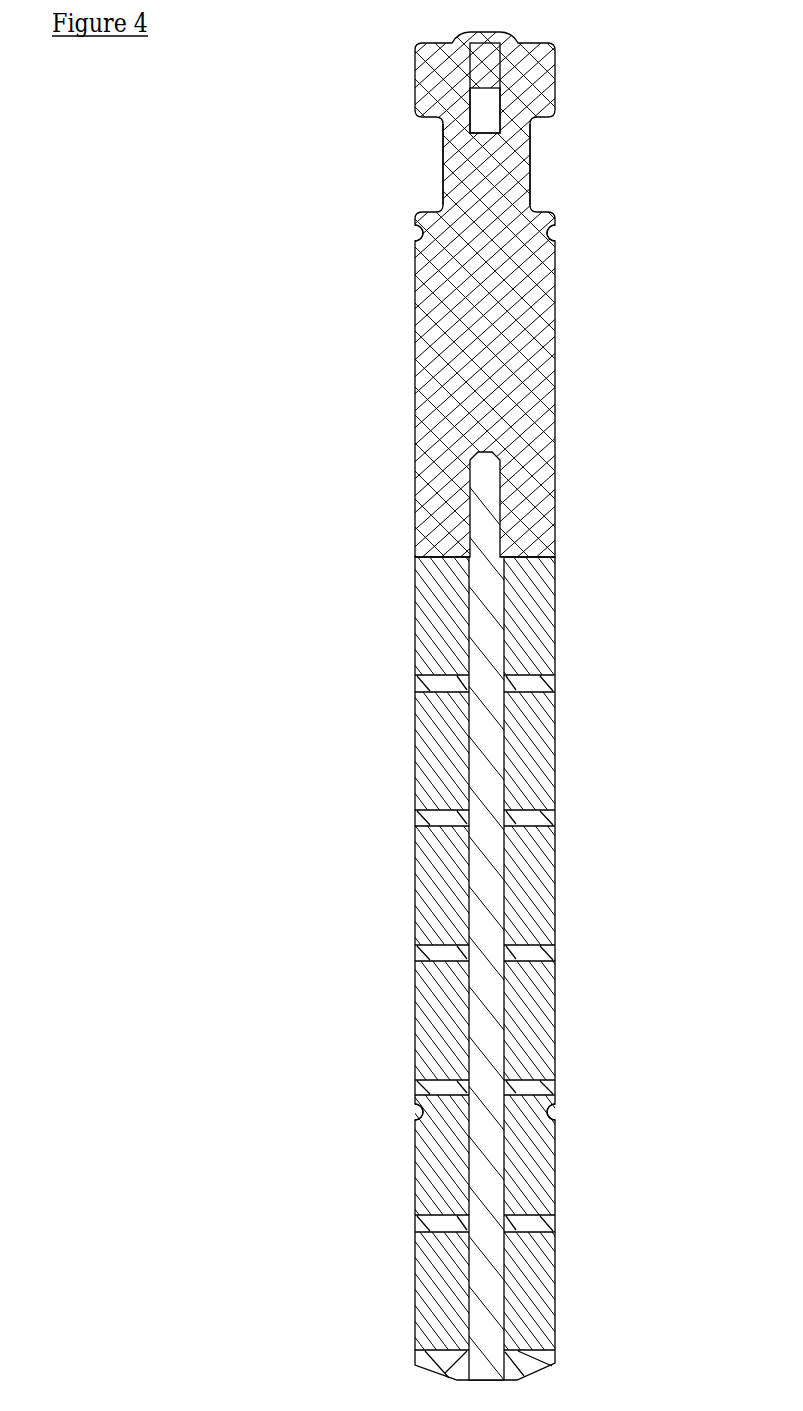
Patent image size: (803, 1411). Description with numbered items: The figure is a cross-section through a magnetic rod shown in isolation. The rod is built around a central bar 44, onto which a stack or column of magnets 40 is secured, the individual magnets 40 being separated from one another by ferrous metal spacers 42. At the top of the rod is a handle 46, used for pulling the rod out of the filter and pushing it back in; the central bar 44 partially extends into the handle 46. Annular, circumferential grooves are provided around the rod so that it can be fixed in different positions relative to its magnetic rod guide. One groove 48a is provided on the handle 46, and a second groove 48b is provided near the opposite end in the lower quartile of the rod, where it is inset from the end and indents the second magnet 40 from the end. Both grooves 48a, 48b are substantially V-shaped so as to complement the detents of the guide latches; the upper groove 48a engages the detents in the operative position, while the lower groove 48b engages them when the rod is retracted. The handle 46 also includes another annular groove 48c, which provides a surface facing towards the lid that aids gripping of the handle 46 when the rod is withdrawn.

The magnets 40 is at (530, 1012).
The ferrous metal spacers 42 is at (430, 819).
The central bar 44 is at (485, 628).
The handle 46 is at (521, 355).
The groove 48a is at (556, 234).
The groove 48b is at (555, 1111).
The annular groove 48c is at (540, 160).